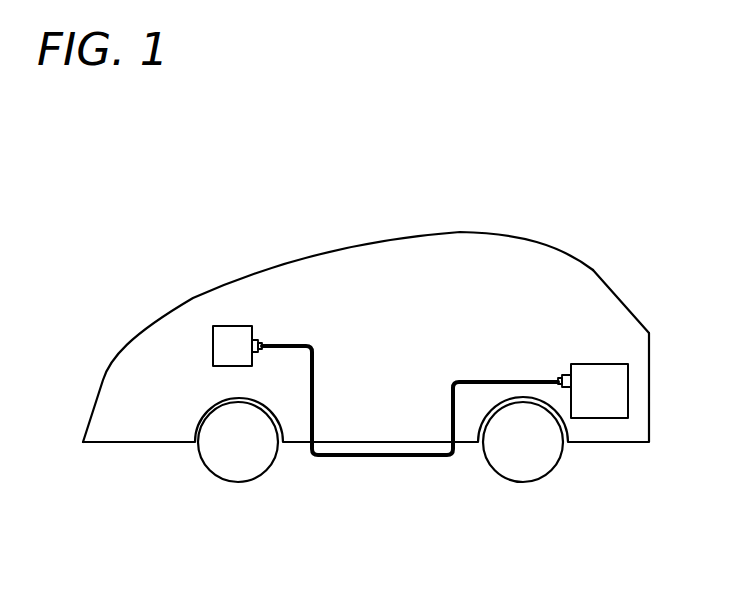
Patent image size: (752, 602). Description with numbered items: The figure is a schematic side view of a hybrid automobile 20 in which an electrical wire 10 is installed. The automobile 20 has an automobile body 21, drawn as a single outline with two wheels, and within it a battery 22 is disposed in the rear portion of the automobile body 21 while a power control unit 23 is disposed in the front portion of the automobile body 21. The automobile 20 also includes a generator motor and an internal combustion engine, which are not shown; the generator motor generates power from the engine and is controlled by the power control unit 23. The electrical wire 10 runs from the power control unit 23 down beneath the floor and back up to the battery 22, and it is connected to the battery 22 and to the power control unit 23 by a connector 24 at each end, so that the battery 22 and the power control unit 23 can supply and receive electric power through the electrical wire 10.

The electrical wire 10 is at (352, 462).
The hybrid automobile 20 is at (483, 222).
The automobile body 21 is at (593, 270).
The battery 22 is at (605, 363).
The power control unit 23 is at (232, 326).
The connector 24 is at (255, 340).